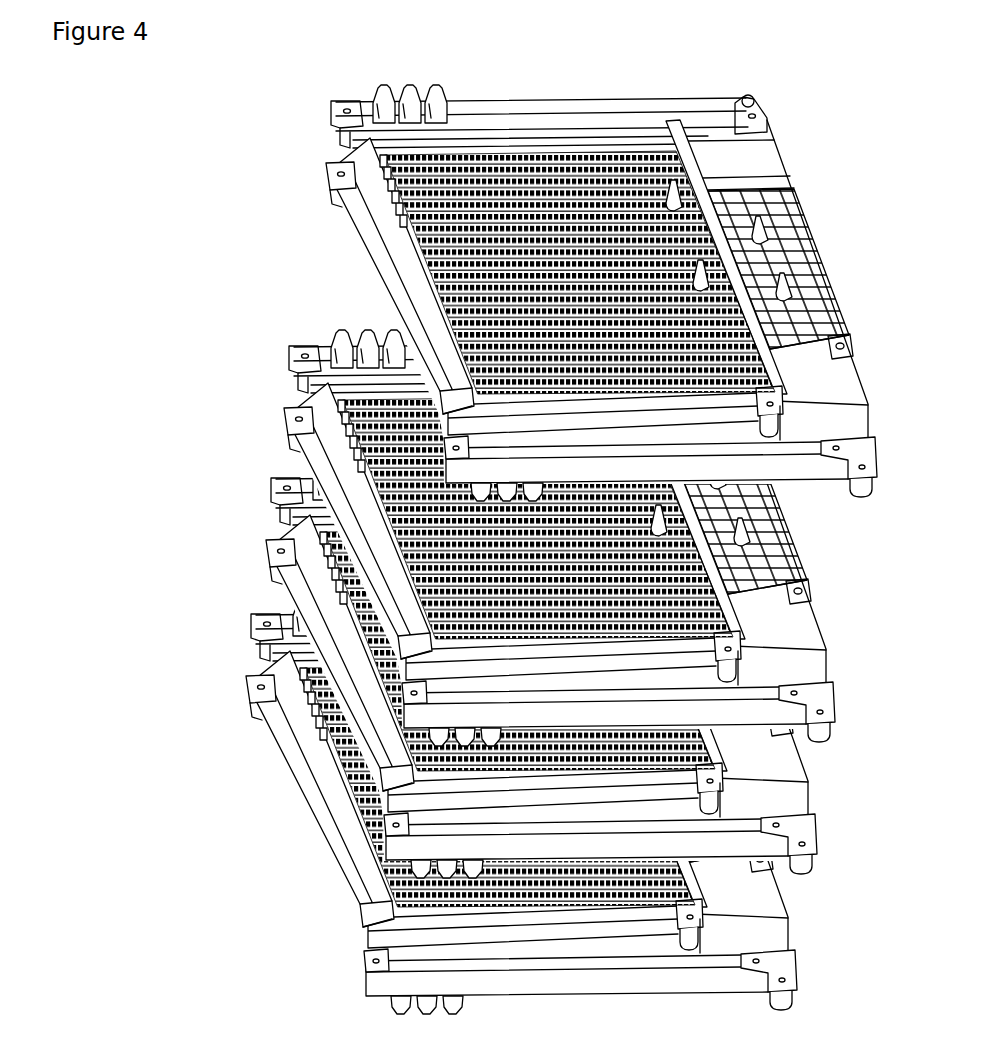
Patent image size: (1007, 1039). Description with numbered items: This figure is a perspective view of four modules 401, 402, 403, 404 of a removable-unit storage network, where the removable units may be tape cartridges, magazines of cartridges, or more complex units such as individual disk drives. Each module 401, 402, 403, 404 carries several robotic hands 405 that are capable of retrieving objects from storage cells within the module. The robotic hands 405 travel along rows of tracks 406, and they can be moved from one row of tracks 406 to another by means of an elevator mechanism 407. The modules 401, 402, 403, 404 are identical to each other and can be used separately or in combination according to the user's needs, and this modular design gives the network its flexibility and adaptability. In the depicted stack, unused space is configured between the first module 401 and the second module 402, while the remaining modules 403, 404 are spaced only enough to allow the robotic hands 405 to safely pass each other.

The module 401 is at (930, 405).
The module 402 is at (898, 676).
The module 403 is at (882, 811).
The module 404 is at (876, 930).
The robotic hands 405 is at (357, 86).
The rows of tracks 406 is at (530, 160).
The elevator mechanism 407 is at (390, 245).